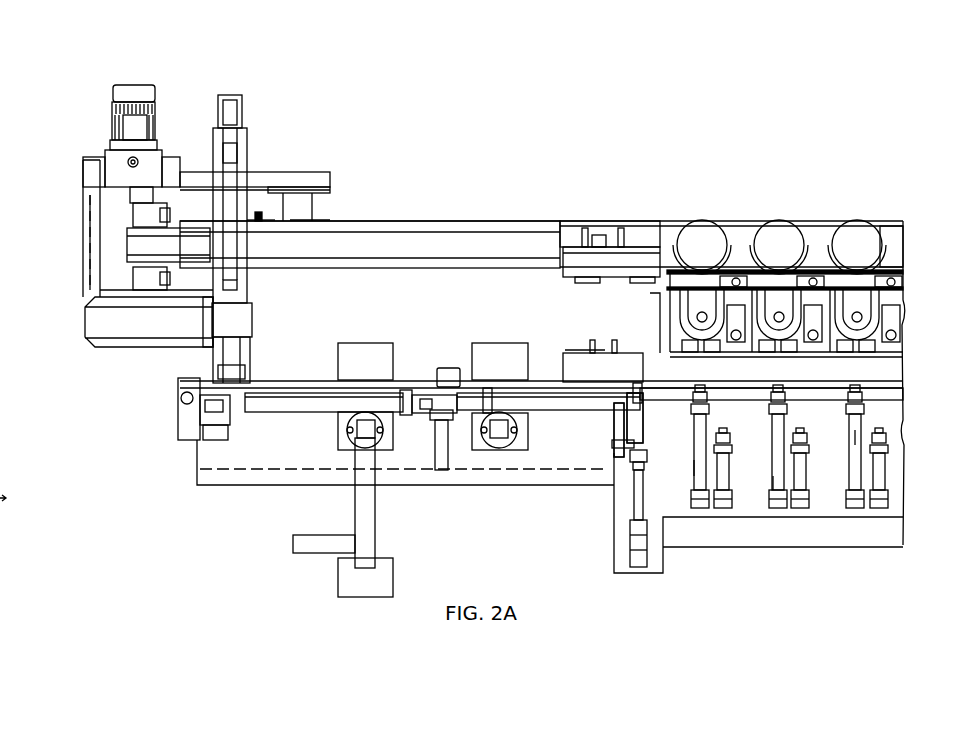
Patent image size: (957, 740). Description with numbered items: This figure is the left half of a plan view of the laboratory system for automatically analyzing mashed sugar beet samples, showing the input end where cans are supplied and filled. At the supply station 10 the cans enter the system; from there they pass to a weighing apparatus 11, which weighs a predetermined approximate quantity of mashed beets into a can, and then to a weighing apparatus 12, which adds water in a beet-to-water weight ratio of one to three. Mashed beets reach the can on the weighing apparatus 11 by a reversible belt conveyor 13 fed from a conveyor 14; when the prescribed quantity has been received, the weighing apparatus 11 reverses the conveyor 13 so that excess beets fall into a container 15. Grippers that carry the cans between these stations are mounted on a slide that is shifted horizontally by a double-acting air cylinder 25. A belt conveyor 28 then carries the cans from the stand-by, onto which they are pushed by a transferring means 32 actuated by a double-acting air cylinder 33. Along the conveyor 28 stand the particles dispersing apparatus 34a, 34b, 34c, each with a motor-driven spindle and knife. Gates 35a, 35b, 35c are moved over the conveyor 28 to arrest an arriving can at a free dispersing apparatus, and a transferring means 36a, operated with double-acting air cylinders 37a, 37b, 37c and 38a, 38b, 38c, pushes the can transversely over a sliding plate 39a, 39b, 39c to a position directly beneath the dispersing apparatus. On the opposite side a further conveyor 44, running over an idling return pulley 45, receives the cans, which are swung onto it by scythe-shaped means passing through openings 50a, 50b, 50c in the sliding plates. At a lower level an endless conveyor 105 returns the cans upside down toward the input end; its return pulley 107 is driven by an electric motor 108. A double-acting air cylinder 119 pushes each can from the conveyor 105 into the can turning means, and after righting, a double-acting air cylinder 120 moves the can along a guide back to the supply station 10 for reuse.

The supply station 10 is at (228, 373).
The weighing apparatus 11 is at (369, 347).
The weighing apparatus 12 is at (500, 347).
The belt conveyor 13 is at (376, 512).
The conveyor 14 is at (318, 548).
The container 15 is at (395, 578).
The double-acting air cylinder 25 is at (300, 406).
The belt conveyor 28 is at (607, 368).
The transferring means 32 is at (625, 444).
The double-acting air cylinder 33 is at (640, 503).
The particles dispersing apparatus 34a is at (690, 303).
The particles dispersing apparatus 34b is at (773, 296).
The particles dispersing apparatus 34c is at (851, 296).
The gate 35a is at (708, 422).
The gate 35b is at (787, 422).
The gate 35c is at (866, 420).
The transferring means 36a is at (694, 402).
The double-acting air cylinder 37a is at (722, 485).
The double-acting air cylinder 37b is at (801, 487).
The double-acting air cylinder 37c is at (884, 480).
The double-acting air cylinder 38a is at (694, 468).
The double-acting air cylinder 38b is at (773, 483).
The double-acting air cylinder 38c is at (857, 436).
The sliding plate 39a is at (706, 351).
The sliding plate 39b is at (768, 352).
The sliding plate 39c is at (850, 352).
The further conveyor 44 is at (575, 270).
The idling return pulley 45 is at (565, 225).
The opening 50a is at (692, 345).
The opening 50b is at (786, 346).
The opening 50c is at (873, 357).
The endless conveyor 105 is at (436, 237).
The return pulley 107 is at (128, 232).
The electric motor 108 is at (138, 92).
The double-acting air cylinder 119 is at (232, 122).
The double-acting air cylinder 120 is at (232, 172).